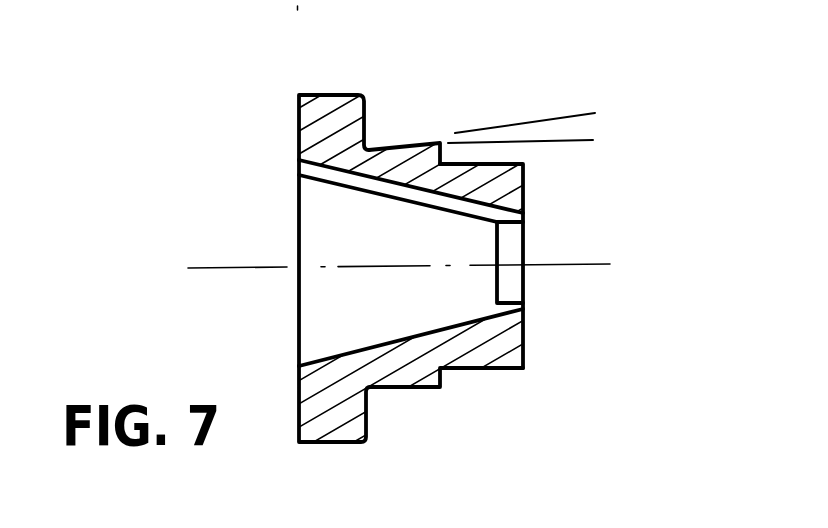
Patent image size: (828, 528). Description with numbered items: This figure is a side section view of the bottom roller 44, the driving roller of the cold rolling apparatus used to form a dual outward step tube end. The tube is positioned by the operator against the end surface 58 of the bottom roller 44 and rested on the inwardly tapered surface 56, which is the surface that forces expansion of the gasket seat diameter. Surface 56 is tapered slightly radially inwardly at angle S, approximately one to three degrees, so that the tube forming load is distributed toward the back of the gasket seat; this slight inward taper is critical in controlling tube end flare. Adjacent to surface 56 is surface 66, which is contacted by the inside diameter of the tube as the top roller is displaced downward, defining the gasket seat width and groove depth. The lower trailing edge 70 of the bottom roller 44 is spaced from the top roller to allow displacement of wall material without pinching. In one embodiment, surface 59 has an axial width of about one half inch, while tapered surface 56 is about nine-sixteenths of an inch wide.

The bottom roller 44 is at (234, 188).
The tapered surface 56 is at (398, 141).
The end surface 58 is at (366, 107).
The surface 59 is at (333, 444).
The surface 66 is at (505, 163).
The lower trailing edge 70 is at (440, 374).
The angle S is at (575, 128).